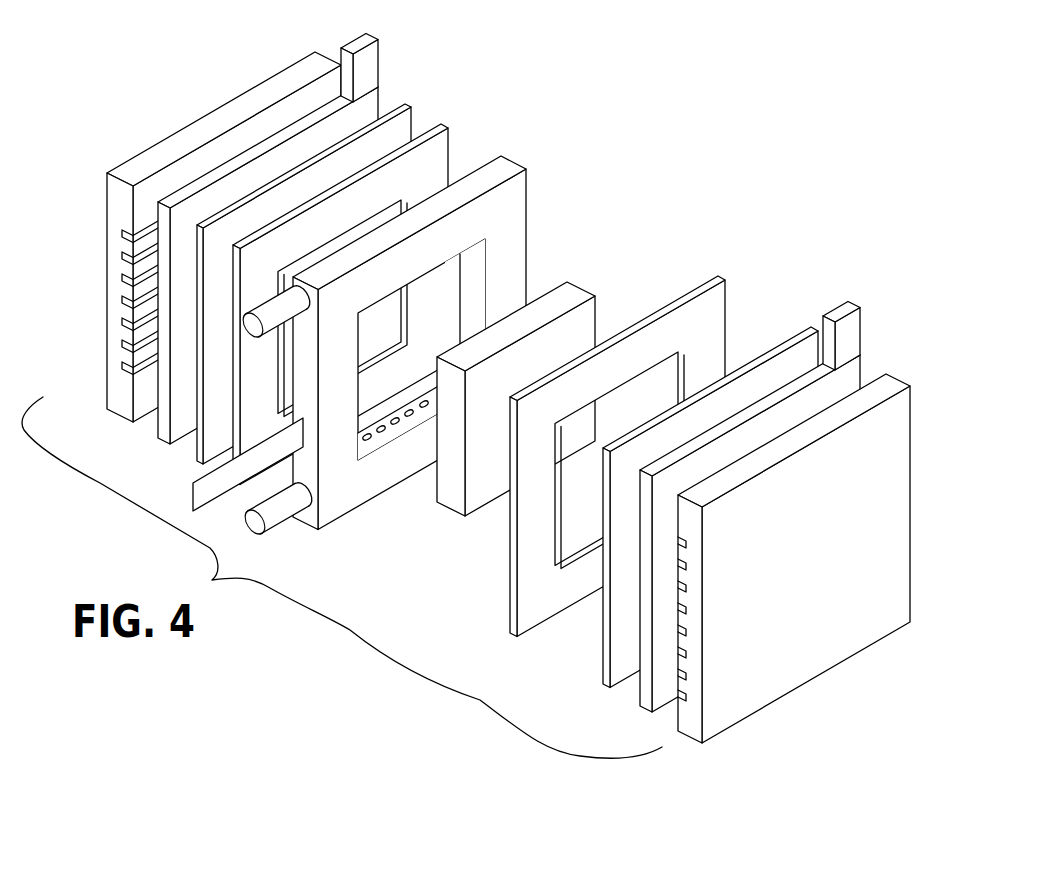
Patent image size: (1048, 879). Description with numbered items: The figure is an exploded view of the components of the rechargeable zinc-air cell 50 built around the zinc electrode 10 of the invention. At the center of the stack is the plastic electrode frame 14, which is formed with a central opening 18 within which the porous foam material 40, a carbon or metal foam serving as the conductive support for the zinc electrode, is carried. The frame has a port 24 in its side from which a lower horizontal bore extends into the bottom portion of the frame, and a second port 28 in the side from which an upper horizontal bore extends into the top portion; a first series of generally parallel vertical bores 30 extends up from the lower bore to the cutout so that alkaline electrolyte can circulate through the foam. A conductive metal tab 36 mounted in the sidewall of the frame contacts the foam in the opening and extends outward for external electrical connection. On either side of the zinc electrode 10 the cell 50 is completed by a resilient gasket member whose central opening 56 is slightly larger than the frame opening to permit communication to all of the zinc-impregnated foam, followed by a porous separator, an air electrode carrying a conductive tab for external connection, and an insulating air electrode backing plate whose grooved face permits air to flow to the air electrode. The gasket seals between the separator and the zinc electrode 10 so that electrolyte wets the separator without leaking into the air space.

The zinc electrode 10 is at (603, 170).
The electrode frame 14 is at (436, 324).
The central opening 18 is at (445, 310).
The port 24 is at (282, 528).
The port 28 is at (250, 334).
The vertical bores 30 is at (409, 416).
The conductive metal tab 36 is at (192, 495).
The porous foam material 40 is at (557, 307).
The zinc-air cell 50 is at (990, 487).
The central opening 56 is at (577, 510).